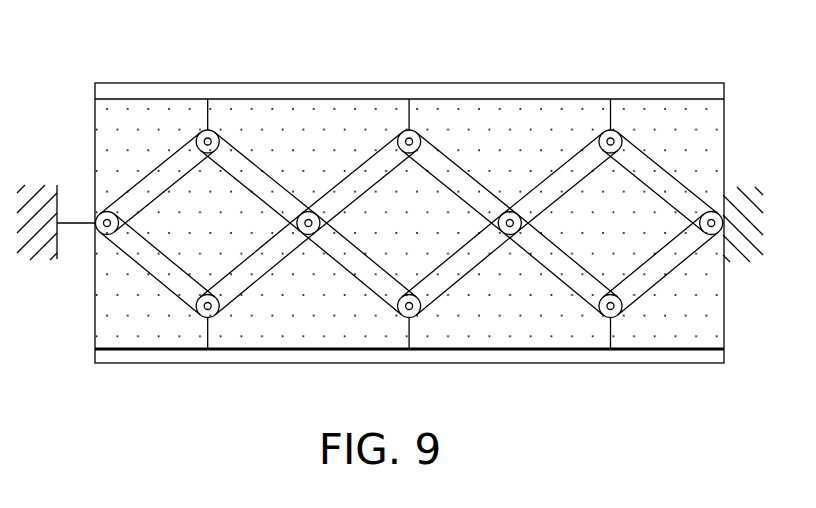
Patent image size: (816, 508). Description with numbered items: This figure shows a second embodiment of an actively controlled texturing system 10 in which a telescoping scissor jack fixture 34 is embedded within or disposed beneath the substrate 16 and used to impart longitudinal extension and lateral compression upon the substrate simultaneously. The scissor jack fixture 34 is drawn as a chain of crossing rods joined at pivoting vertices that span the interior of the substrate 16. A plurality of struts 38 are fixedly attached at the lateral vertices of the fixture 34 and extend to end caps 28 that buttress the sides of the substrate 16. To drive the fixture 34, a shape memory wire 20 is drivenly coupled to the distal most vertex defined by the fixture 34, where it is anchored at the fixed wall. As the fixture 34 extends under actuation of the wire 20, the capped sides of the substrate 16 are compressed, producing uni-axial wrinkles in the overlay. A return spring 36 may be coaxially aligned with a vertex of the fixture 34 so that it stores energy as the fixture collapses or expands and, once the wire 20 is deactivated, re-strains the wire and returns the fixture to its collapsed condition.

The actively controlled texturing system 10 is at (354, 58).
The substrate 16 is at (282, 152).
The shape memory wire 20 is at (73, 222).
The end caps 28 is at (103, 364).
The telescoping scissor jack fixture 34 is at (439, 148).
The spring 36 is at (491, 203).
The struts 38 is at (612, 112).